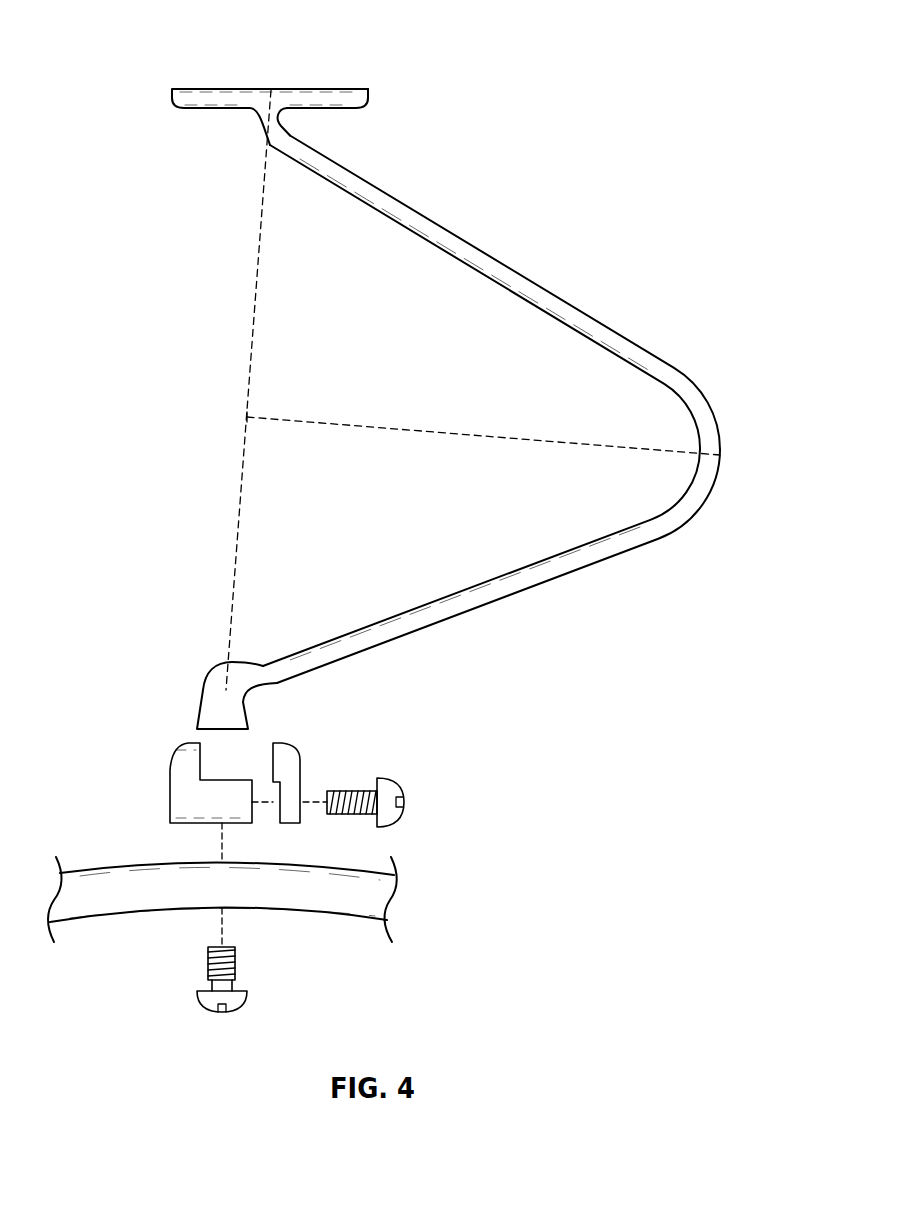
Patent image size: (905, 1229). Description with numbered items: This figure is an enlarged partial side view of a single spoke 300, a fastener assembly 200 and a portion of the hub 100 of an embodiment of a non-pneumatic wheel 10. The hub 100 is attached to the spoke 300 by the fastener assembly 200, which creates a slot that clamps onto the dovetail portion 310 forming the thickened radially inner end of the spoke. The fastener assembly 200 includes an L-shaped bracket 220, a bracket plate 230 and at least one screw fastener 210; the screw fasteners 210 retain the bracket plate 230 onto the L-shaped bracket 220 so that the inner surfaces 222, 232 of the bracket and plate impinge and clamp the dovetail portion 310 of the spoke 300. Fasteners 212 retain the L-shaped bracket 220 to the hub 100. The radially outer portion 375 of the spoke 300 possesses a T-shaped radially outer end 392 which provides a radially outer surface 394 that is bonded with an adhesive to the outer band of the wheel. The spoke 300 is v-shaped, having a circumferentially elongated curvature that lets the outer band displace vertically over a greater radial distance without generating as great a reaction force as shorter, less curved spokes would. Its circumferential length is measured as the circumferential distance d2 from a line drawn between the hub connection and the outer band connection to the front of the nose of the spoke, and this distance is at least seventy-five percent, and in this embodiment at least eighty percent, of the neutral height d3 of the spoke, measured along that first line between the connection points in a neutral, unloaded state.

The non-pneumatic wheel 10 is at (622, 66).
The hub 100 is at (297, 900).
The fastener assembly 200 is at (423, 743).
The screw fastener 210 is at (348, 788).
The fastener 212 is at (207, 965).
The L-shaped bracket 220 is at (187, 803).
The inner surface of L-shaped bracket 222 is at (203, 765).
The bracket plate 230 is at (288, 765).
The inner surface of bracket plate 232 is at (272, 762).
The spoke 300 is at (527, 578).
The dovetail portion 310 is at (210, 697).
The radially outer portion of the spoke 375 is at (415, 220).
The T-shaped radially outer end 392 is at (274, 82).
The radially outer surface 394 is at (245, 88).
The circumferential distance d2 is at (435, 436).
The neutral height d3 is at (250, 330).